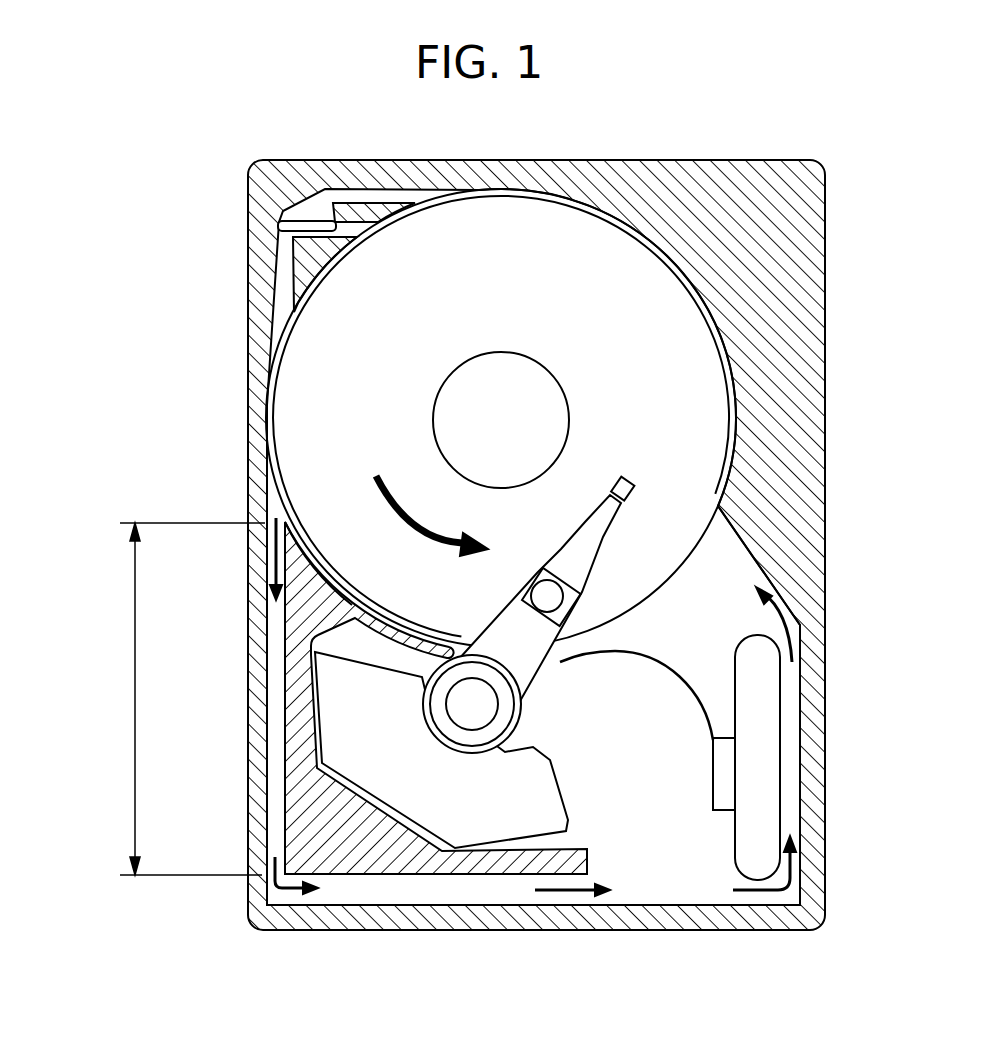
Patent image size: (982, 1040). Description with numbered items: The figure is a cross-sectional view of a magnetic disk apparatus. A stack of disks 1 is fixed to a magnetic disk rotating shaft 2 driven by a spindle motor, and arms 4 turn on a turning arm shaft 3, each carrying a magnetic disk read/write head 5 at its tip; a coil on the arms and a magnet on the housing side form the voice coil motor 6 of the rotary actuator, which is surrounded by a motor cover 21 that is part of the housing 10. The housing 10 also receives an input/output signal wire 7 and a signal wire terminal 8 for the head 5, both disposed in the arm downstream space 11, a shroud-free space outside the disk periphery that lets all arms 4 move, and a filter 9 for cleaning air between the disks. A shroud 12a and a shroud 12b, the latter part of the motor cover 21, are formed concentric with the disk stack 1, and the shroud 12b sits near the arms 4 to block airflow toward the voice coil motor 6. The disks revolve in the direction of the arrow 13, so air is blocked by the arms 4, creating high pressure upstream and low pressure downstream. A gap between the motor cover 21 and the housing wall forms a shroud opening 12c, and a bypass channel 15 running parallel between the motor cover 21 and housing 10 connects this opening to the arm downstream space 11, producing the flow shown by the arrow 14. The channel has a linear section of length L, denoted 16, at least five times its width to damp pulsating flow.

The disks 1 is at (672, 324).
The magnetic disk rotating shaft 2 is at (523, 376).
The turning arm shaft 3 is at (483, 713).
The arms 4 is at (555, 592).
The magnetic disk read/write head 5 is at (634, 485).
The voice coil motor 6 is at (413, 778).
The input/output signal wire 7 is at (650, 660).
The signal wire terminal 8 is at (765, 776).
The filter 9 is at (308, 227).
The housing 10 is at (260, 908).
The arm downstream space 11 is at (715, 572).
The shroud 12a is at (742, 407).
The shroud 12b is at (285, 616).
The shroud opening 12c is at (273, 503).
The arrow 13 is at (377, 488).
The arrow 14 is at (563, 890).
The bypass channel 15 is at (273, 817).
The length L 16 is at (112, 715).
The motor cover 21 is at (288, 738).